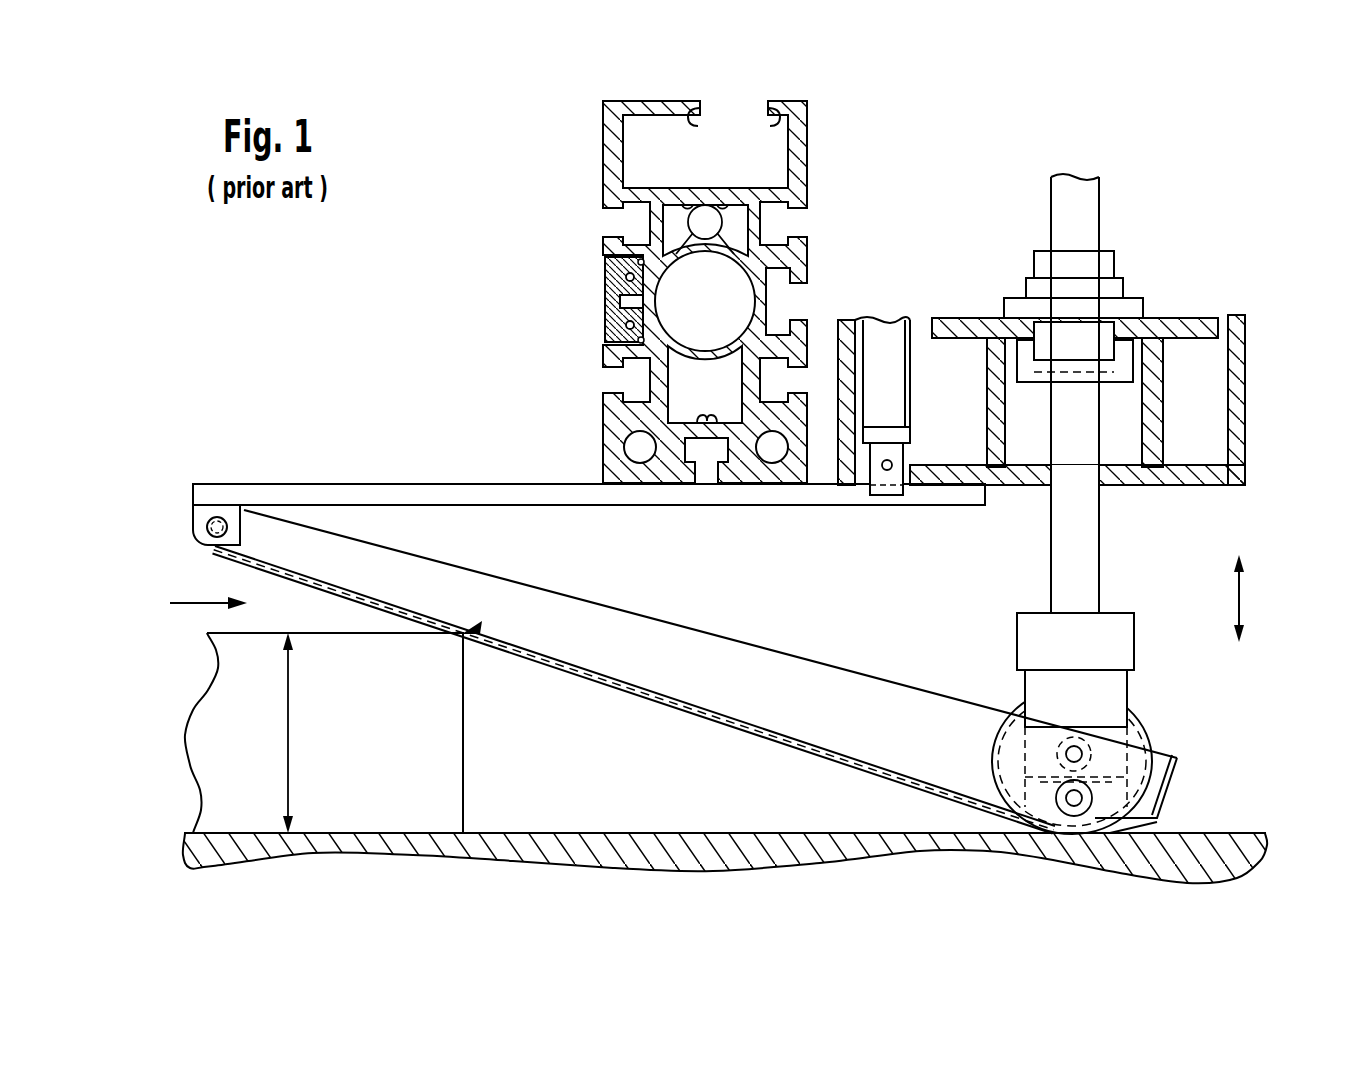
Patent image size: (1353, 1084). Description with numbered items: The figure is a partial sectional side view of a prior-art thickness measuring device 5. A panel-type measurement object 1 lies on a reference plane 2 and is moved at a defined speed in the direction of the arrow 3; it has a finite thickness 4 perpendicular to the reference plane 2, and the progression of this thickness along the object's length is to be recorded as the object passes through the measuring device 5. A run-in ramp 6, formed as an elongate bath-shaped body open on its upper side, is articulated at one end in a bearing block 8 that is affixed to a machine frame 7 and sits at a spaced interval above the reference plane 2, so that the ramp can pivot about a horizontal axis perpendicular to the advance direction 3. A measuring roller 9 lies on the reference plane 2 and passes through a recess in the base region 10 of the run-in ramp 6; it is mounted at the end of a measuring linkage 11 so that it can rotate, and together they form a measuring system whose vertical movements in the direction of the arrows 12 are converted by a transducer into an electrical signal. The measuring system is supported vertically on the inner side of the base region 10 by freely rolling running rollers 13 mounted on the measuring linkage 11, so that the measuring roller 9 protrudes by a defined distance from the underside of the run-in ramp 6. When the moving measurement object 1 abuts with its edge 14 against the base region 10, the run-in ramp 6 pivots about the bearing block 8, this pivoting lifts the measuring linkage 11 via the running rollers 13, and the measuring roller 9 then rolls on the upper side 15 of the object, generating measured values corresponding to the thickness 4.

The measurement object 1 is at (393, 733).
The reference plane 2 is at (574, 833).
The arrow (advance direction) 3 is at (180, 603).
The thickness 4 is at (292, 765).
The measuring device 5 is at (948, 251).
The run-in ramp 6 is at (655, 633).
The machine frame 7 is at (603, 175).
The bearing block 8 is at (205, 512).
The measuring roller 9 is at (1140, 722).
The base region 10 is at (641, 693).
The measuring linkage 11 is at (1068, 562).
The arrows (vertical movement direction) 12 is at (1241, 592).
The running rollers 13 is at (1100, 790).
The edge 14 is at (484, 622).
The upper side 15 is at (298, 633).